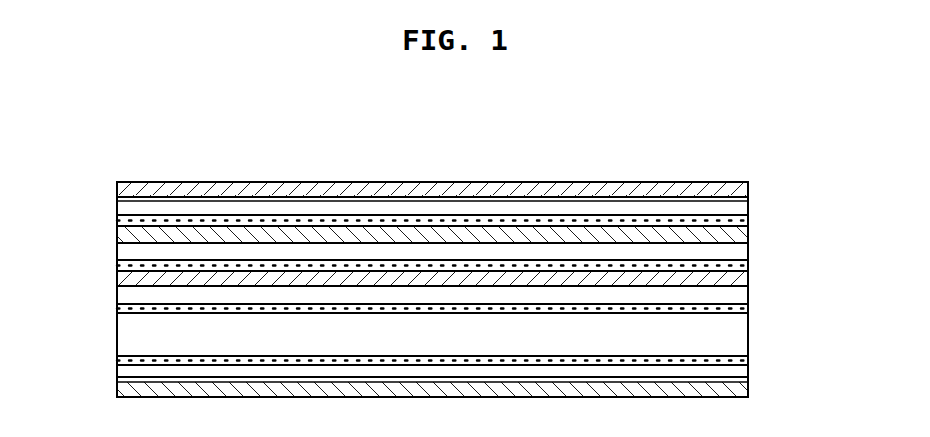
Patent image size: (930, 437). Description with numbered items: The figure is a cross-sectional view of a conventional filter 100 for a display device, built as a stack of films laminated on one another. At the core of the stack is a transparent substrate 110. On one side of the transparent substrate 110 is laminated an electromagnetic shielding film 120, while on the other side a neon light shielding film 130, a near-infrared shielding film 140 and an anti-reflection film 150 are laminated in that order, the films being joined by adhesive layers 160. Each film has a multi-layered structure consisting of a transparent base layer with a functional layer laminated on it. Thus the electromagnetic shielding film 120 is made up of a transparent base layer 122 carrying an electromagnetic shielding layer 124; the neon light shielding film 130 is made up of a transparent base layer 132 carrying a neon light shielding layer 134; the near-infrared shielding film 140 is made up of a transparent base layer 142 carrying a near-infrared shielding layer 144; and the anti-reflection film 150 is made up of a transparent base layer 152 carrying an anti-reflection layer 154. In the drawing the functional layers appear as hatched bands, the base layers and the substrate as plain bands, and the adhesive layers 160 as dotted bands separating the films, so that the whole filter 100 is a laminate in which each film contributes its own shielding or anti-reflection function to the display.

The filter 100 is at (600, 164).
The transparent substrate 110 is at (748, 335).
The electromagnetic shielding film 120 is at (838, 362).
The transparent base layer 122 is at (748, 372).
The electromagnetic shielding layer 124 is at (748, 393).
The neon light shielding film 130 is at (838, 283).
The transparent base layer 132 is at (748, 297).
The neon light shielding layer 134 is at (748, 278).
The near-infrared shielding film 140 is at (838, 218).
The transparent base layer 142 is at (748, 252).
The near-infrared shielding layer 144 is at (748, 232).
The anti-reflection film 150 is at (838, 163).
The transparent base layer 152 is at (748, 205).
The anti-reflection layer 154 is at (748, 185).
The adhesive layer 160 is at (123, 220).